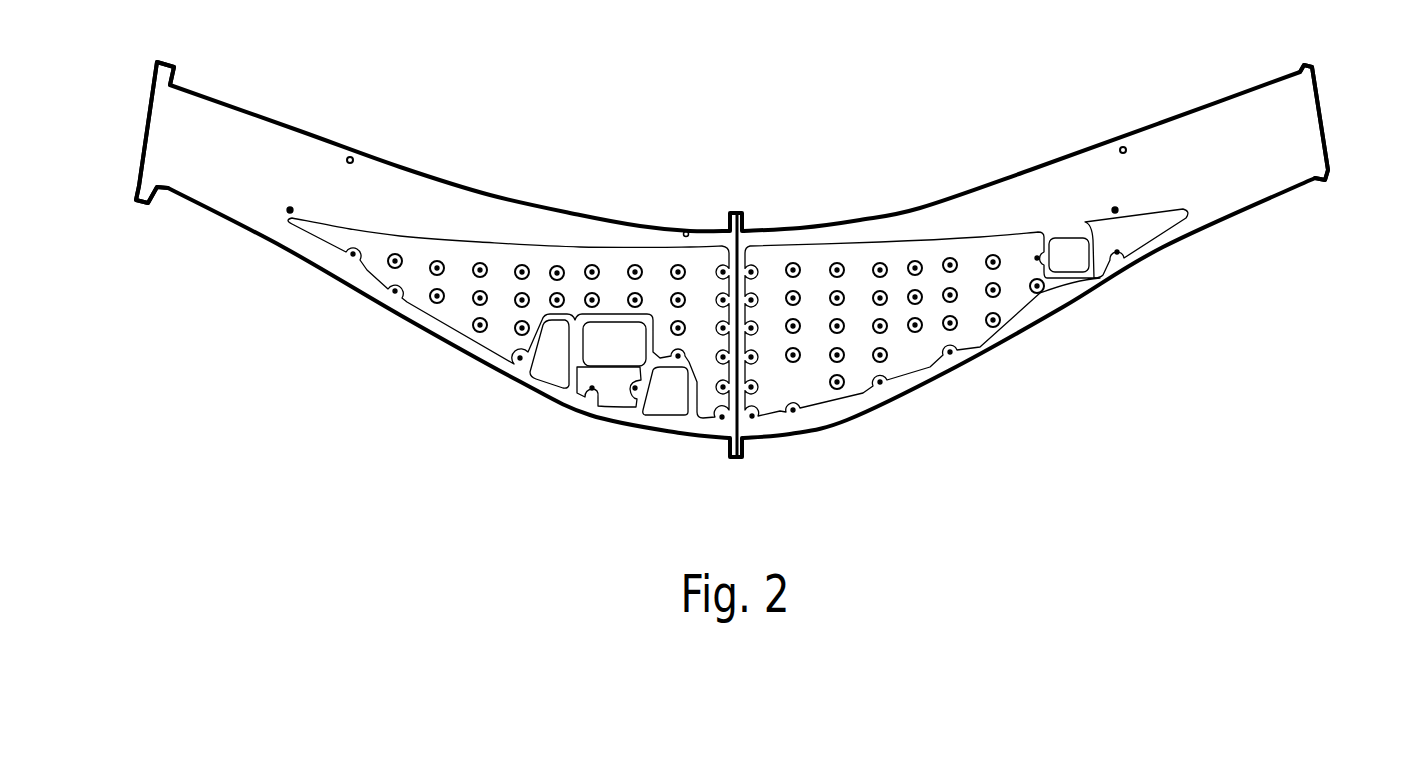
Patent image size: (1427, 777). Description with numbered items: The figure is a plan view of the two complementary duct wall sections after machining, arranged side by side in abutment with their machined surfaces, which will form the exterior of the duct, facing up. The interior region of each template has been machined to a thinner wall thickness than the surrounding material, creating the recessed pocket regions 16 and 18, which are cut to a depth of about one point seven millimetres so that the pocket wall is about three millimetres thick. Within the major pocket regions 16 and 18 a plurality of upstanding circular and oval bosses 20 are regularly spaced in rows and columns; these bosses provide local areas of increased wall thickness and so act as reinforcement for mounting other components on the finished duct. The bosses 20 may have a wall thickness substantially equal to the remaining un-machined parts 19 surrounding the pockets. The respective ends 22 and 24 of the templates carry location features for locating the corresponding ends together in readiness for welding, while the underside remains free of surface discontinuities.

The recessed pocket region 16 is at (612, 268).
The recessed pocket region 18 is at (855, 262).
The un-machined parts 19 is at (447, 200).
The bosses 20 is at (437, 305).
The end of template 22 is at (733, 415).
The end of template 24 is at (150, 125).